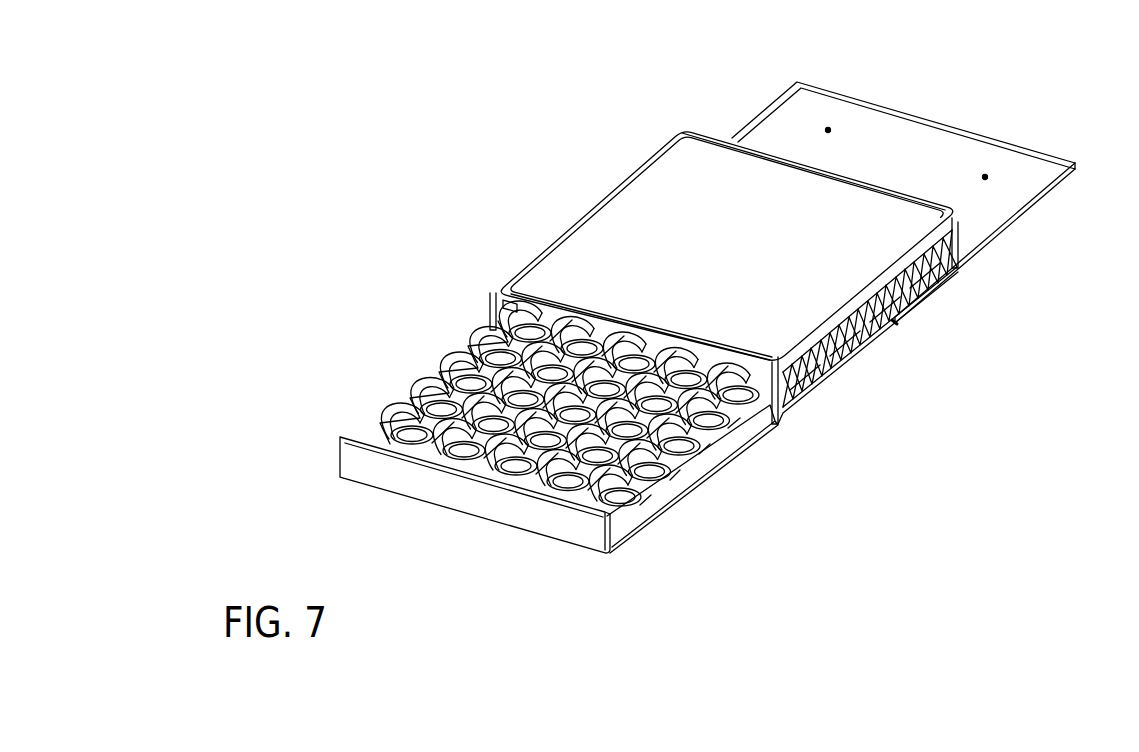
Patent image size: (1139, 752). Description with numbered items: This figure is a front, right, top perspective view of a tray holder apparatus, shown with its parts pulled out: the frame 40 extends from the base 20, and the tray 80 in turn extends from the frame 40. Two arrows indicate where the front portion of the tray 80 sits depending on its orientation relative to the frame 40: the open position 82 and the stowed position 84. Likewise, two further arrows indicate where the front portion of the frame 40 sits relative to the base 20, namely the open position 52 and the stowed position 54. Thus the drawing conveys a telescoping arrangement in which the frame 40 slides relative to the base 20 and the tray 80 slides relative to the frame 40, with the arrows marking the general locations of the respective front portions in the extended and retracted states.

The base 20 is at (899, 133).
The frame 40 is at (675, 217).
The open position 52 is at (815, 418).
The stowed position 54 is at (910, 333).
The tray 80 is at (570, 532).
The open position 82 is at (376, 537).
The stowed position 84 is at (460, 441).